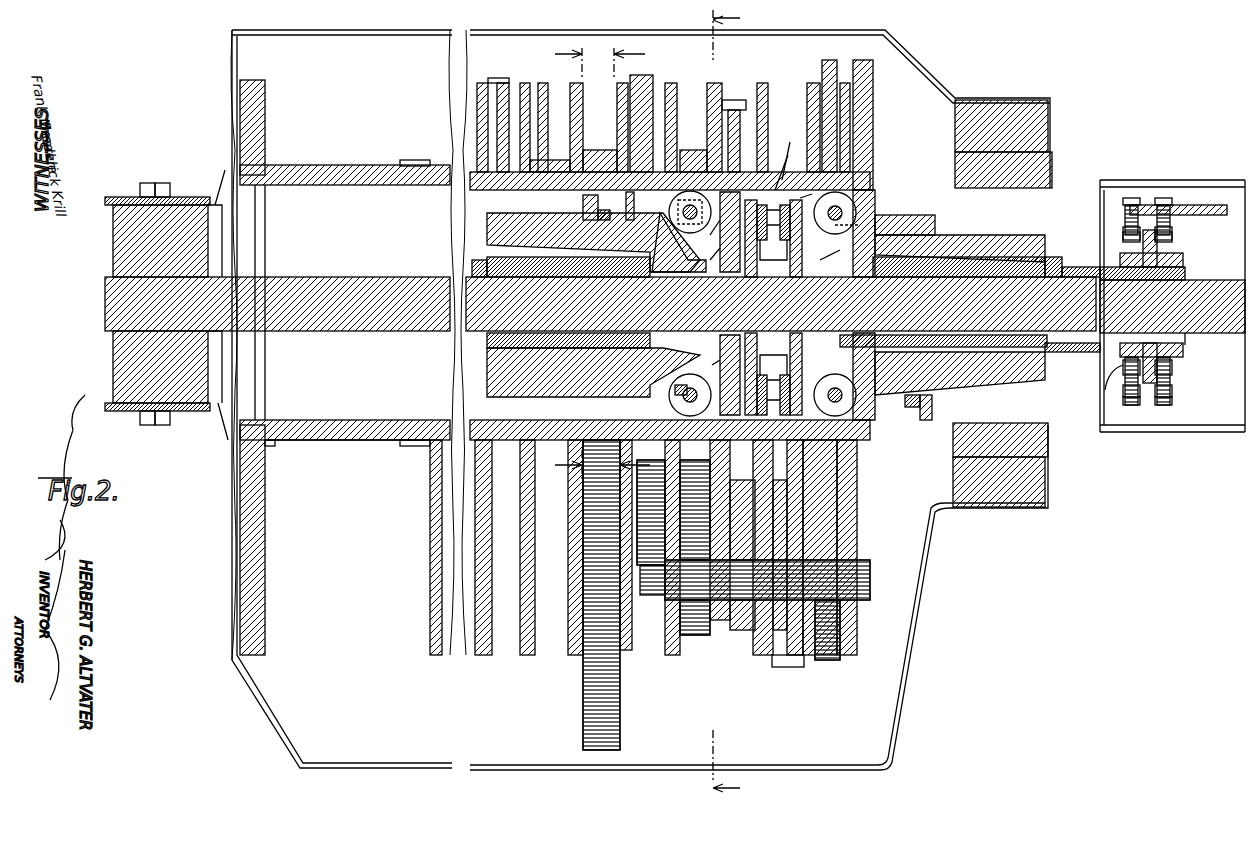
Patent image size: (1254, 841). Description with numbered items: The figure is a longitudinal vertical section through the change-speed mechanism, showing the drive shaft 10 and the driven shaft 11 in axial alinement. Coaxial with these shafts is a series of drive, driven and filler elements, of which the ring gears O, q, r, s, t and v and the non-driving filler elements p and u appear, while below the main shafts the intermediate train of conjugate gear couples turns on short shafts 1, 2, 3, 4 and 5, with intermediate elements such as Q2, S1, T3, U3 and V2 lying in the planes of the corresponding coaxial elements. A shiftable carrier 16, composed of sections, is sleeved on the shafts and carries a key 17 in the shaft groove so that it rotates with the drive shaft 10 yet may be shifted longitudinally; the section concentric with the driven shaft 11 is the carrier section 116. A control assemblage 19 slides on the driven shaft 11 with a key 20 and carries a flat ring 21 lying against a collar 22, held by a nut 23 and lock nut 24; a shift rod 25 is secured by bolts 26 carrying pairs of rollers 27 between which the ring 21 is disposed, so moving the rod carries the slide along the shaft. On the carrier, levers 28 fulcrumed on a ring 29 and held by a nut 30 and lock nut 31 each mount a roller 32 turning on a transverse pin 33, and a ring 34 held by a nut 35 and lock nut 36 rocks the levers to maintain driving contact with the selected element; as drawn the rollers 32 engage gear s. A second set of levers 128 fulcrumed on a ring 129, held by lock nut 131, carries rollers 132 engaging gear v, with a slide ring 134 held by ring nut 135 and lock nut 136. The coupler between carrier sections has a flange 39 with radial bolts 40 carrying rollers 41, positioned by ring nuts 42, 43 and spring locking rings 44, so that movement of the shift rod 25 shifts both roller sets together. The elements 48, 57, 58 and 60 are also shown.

The short shaft 1 is at (870, 578).
The short shaft 2 is at (651, 512).
The short shaft 3 is at (734, 404).
The short shaft 4 is at (638, 262).
The short shaft 5 is at (559, 262).
The drive shaft 10 is at (370, 331).
The driven shaft 11 is at (1210, 336).
The shiftable carrier 16 is at (512, 348).
The key 17 is at (472, 268).
The control assemblage 19 is at (1175, 250).
The key 20 is at (1185, 275).
The flat ring 21 is at (1150, 405).
The collar 22 is at (1183, 350).
The nut 23 is at (1113, 382).
The lock nut 24 is at (1100, 355).
The shift rod 25 is at (1227, 215).
The bolts 26 is at (1132, 198).
The rollers 27 is at (1185, 232).
The lever 28 is at (500, 213).
The fulcrum ring 29 is at (615, 410).
The nut 30 is at (723, 227).
The lock nut 31 is at (723, 250).
The roller 32 is at (725, 205).
The pin 33 is at (690, 212).
The ring 34 is at (583, 200).
The nut 35 is at (668, 293).
The lock nut 36 is at (635, 205).
The annular flange 39 is at (785, 167).
The radial bolts 40 is at (783, 153).
The rollers 41 is at (801, 197).
The ring nut 42 is at (835, 395).
The ring nut 43 is at (723, 364).
The spring locking rings 44 is at (762, 301).
The casing bottom 48 is at (362, 430).
The clutch hub 57 is at (773, 307).
The clutch discs 58 is at (767, 310).
The bearing 60 is at (847, 216).
The carrier section 116 is at (1045, 245).
The second lever 128 is at (1003, 205).
The fulcrum ring 129 is at (905, 210).
The lock nut 131 is at (832, 241).
The roller 132 is at (875, 192).
The slide ring 134 is at (953, 410).
The ring nut 135 is at (926, 420).
The lock nut 136 is at (910, 407).
The ring gear O is at (509, 125).
The filler element p is at (552, 160).
The ring gear q is at (598, 150).
The ring gear r is at (650, 78).
The ring gear s is at (693, 150).
The ring gear t is at (735, 110).
The filler element u is at (805, 125).
The ring gear v is at (862, 78).
The intermediate gear element Q2 is at (620, 728).
The intermediate gear element S1 is at (690, 635).
The intermediate gear element T3 is at (742, 630).
The intermediate gear element U3 is at (790, 667).
The intermediate gear element V2 is at (840, 660).